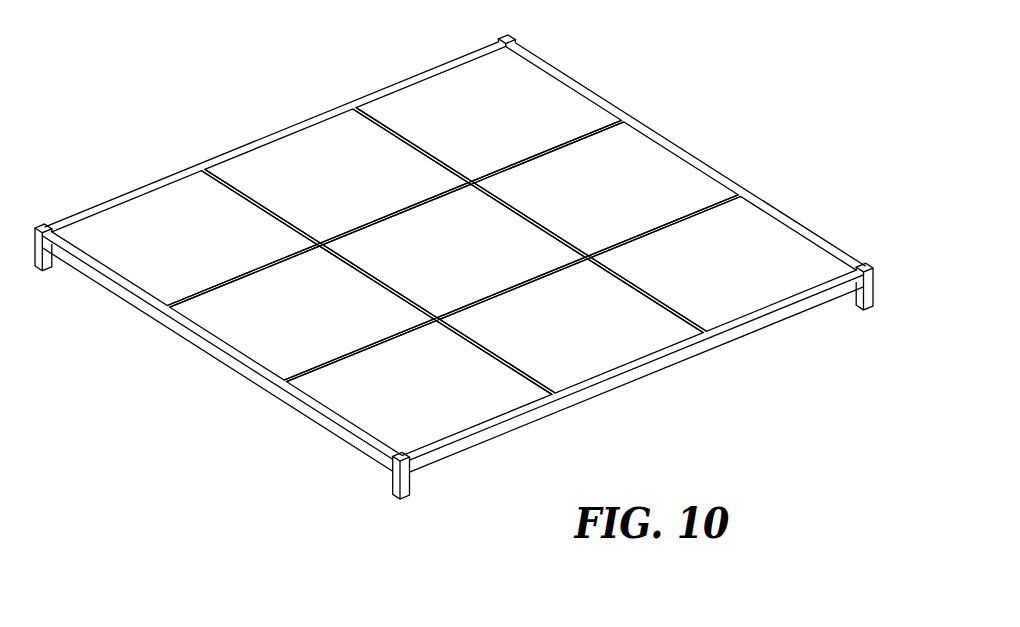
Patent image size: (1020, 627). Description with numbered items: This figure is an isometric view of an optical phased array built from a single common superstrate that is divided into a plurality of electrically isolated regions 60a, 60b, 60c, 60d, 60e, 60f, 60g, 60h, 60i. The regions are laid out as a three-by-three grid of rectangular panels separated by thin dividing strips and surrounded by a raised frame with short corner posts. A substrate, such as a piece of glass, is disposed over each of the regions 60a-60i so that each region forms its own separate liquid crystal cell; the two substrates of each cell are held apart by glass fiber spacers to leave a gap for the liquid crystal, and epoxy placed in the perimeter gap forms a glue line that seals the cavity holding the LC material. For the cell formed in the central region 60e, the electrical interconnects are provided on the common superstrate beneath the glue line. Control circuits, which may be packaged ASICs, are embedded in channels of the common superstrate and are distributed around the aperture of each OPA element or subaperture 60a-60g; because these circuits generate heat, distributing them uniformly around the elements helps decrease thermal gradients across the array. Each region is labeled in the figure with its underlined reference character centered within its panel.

The electrically isolated region 60a is at (406, 398).
The electrically isolated region 60b is at (561, 332).
The electrically isolated region 60c is at (708, 275).
The electrically isolated region 60d is at (585, 194).
The electrically isolated region 60e is at (435, 255).
The electrically isolated region 60f is at (283, 318).
The electrically isolated region 60g is at (171, 243).
The electrically isolated region 60h is at (321, 184).
The electrically isolated region 60i is at (473, 122).